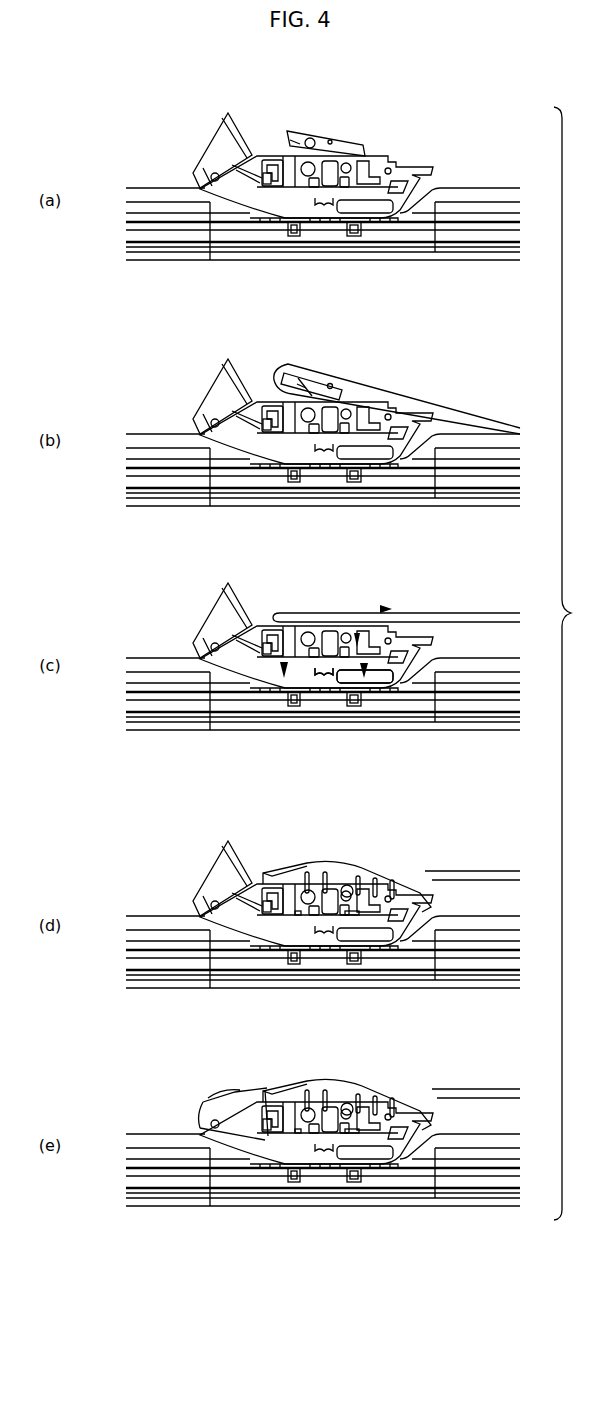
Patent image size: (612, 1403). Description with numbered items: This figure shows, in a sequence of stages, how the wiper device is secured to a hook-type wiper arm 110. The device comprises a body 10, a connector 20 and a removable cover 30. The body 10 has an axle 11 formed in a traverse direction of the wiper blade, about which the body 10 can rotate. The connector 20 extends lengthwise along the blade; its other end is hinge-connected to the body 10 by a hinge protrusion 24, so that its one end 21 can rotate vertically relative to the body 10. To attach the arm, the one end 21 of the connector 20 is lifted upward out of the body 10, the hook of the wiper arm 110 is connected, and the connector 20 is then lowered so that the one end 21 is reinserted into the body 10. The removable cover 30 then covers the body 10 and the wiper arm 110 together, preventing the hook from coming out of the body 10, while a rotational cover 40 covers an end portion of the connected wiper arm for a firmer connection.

The body 10 is at (267, 1146).
The axle 11 is at (322, 680).
The connector 20 is at (336, 370).
The one end of the connector 21 is at (300, 366).
The hinge protrusion 24 is at (386, 680).
The removable cover 30 is at (323, 1078).
The rotational cover 40 is at (202, 1101).
The hook-type wiper arm 110 is at (470, 1089).